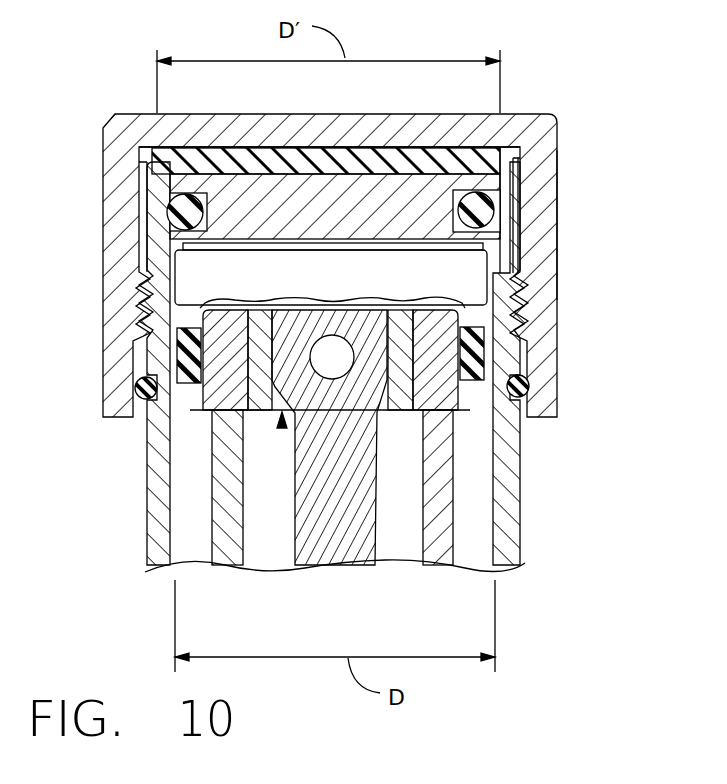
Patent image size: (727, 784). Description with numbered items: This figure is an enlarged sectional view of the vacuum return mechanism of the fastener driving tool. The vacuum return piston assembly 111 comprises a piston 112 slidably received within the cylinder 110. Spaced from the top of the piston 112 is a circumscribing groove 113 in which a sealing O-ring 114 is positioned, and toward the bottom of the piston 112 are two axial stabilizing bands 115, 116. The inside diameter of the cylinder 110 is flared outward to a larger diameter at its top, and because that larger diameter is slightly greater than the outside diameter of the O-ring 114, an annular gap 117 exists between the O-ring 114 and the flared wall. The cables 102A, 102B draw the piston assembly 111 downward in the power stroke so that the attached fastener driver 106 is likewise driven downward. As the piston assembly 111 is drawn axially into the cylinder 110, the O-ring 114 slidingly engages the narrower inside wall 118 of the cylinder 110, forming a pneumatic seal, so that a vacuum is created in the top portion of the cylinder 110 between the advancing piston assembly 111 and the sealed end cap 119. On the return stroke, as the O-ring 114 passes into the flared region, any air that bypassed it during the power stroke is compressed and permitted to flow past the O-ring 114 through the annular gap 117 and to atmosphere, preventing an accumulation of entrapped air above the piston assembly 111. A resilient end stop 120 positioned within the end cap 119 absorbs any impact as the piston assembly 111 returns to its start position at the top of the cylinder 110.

The cylinder 110 is at (522, 460).
The sealed end cap 119 is at (557, 212).
The annular gap 117 is at (497, 194).
The resilient end stop 120 is at (383, 155).
The inside wall 118 is at (188, 568).
The sealing O-ring 114 is at (490, 212).
The circumscribing groove 113 is at (172, 198).
The axial stabilizing band 115 is at (343, 285).
The piston 112 is at (470, 310).
The fastener driver 106 is at (357, 550).
The axial stabilizing band 116 is at (487, 352).
The cable 102A is at (237, 560).
The cable 102B is at (442, 552).
The vacuum return piston assembly 111 is at (283, 426).